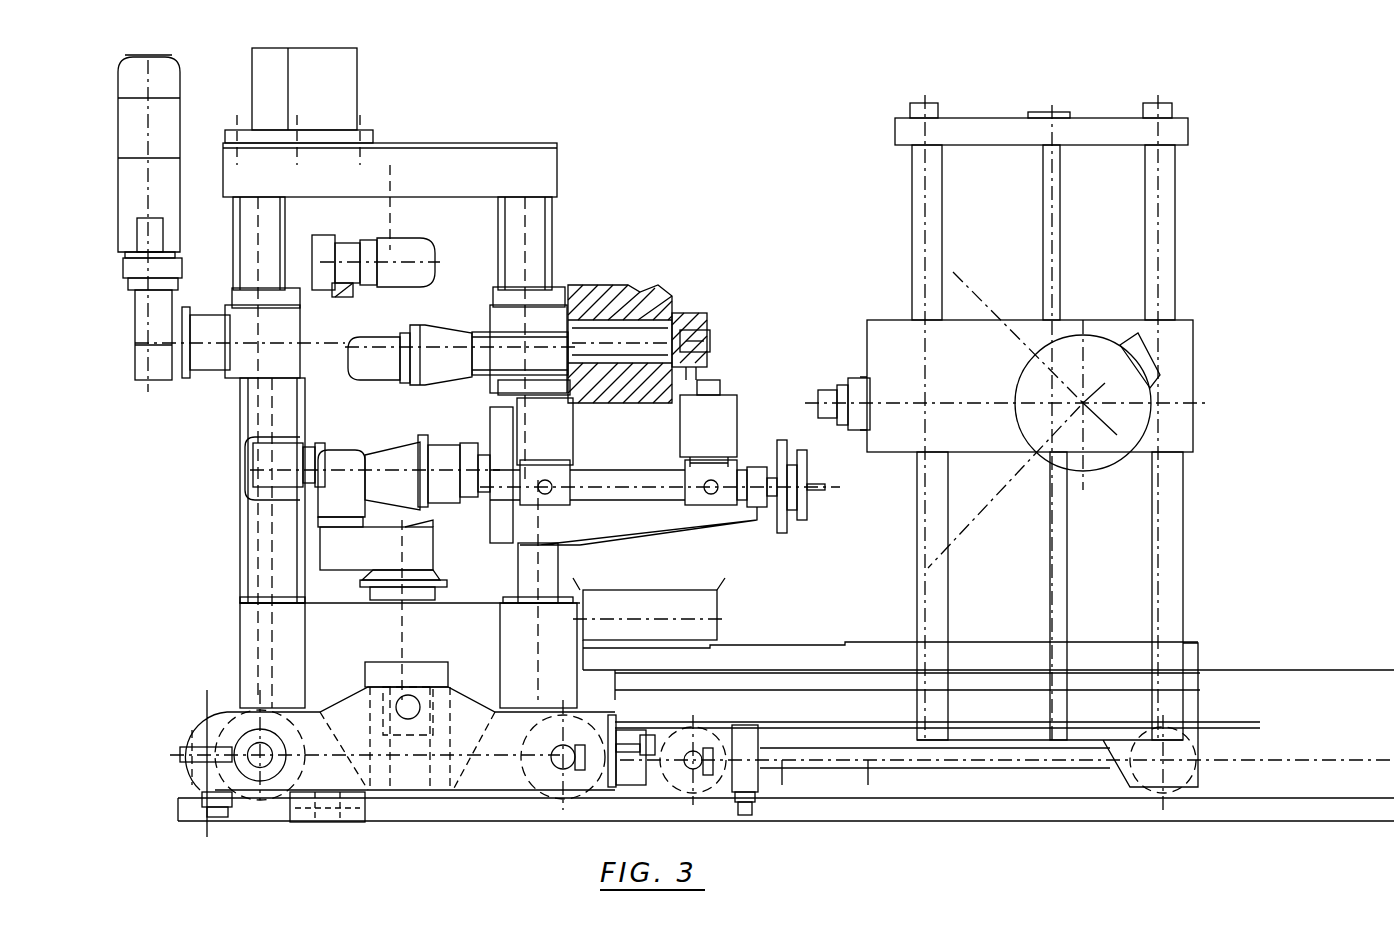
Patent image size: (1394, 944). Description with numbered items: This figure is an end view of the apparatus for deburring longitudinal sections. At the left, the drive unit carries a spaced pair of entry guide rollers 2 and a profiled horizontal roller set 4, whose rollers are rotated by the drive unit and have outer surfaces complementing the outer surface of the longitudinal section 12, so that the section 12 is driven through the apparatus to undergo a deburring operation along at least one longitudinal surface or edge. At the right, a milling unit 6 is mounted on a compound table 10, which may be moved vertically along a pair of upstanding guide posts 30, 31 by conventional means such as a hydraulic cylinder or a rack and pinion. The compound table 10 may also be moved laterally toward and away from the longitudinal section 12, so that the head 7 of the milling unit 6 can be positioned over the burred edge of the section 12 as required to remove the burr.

The entry guide rollers 2 is at (737, 422).
The horizontal roller set 4 is at (612, 292).
The milling unit 6 is at (862, 422).
The head 7 is at (828, 393).
The compound table 10 is at (1183, 372).
The longitudinal section 12 is at (688, 386).
The guide post 30 is at (932, 192).
The guide post 31 is at (1167, 188).